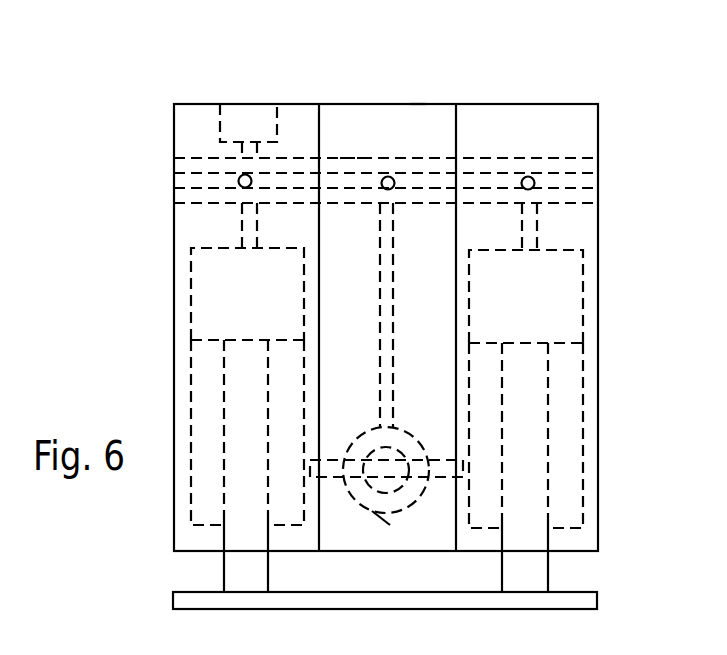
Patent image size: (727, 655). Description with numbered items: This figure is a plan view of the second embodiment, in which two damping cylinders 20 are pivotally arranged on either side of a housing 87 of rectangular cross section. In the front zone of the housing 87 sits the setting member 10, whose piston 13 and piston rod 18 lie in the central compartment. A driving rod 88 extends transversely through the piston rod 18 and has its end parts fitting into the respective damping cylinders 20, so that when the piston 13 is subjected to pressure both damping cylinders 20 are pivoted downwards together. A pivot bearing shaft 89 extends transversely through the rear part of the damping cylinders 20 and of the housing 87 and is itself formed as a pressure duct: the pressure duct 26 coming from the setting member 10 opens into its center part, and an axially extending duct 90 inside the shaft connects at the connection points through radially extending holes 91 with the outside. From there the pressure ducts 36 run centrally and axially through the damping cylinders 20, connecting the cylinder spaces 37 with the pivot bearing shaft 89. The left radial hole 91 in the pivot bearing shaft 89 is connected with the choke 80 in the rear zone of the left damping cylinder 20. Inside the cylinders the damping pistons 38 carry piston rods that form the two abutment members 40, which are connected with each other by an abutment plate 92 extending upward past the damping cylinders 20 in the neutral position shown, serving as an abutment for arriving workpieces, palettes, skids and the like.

The setting member 10 is at (376, 523).
The piston 13 is at (407, 438).
The piston rod 18 is at (382, 448).
The damping cylinder 20 is at (297, 122).
The pressure duct 26 is at (400, 283).
The pressure duct 36 is at (187, 218).
The cylinder space 37 is at (197, 380).
The damping piston 38 is at (200, 288).
The abutment member 40 is at (240, 568).
The choke 80 is at (250, 112).
The housing 87 is at (418, 116).
The driving rod 88 is at (447, 478).
The pivot bearing shaft 89 is at (356, 163).
The axial duct 90 is at (443, 190).
The radial hole 91 is at (240, 178).
The abutment plate 92 is at (587, 597).